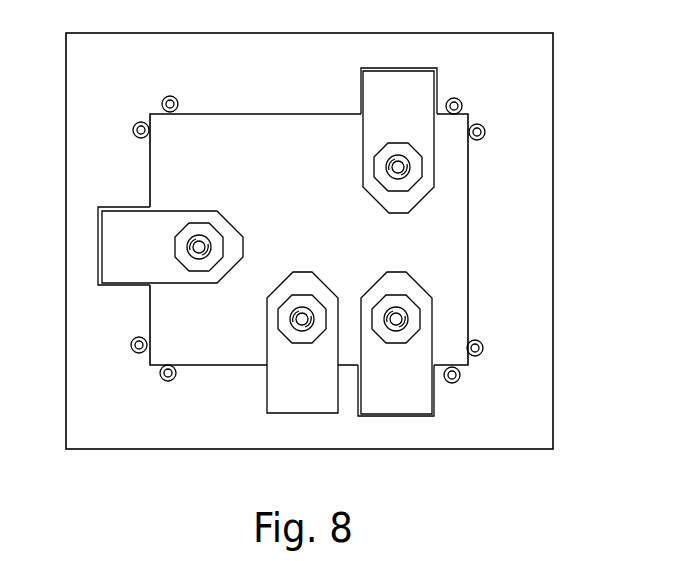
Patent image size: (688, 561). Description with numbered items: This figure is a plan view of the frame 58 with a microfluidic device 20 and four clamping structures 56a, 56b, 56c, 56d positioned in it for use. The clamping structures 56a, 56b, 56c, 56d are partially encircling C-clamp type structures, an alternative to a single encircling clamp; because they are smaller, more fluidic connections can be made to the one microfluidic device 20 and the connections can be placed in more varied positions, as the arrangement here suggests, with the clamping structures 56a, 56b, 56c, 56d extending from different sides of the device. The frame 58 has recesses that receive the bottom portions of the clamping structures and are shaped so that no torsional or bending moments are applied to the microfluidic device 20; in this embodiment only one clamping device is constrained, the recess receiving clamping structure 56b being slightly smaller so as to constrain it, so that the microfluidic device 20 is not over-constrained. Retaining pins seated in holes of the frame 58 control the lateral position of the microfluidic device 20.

The microfluidic device 20 is at (438, 222).
The frame 58 is at (527, 303).
The clamping structure 56a is at (400, 397).
The clamping structure 56b is at (293, 397).
The clamping structure 56c is at (118, 247).
The clamping structure 56d is at (411, 88).